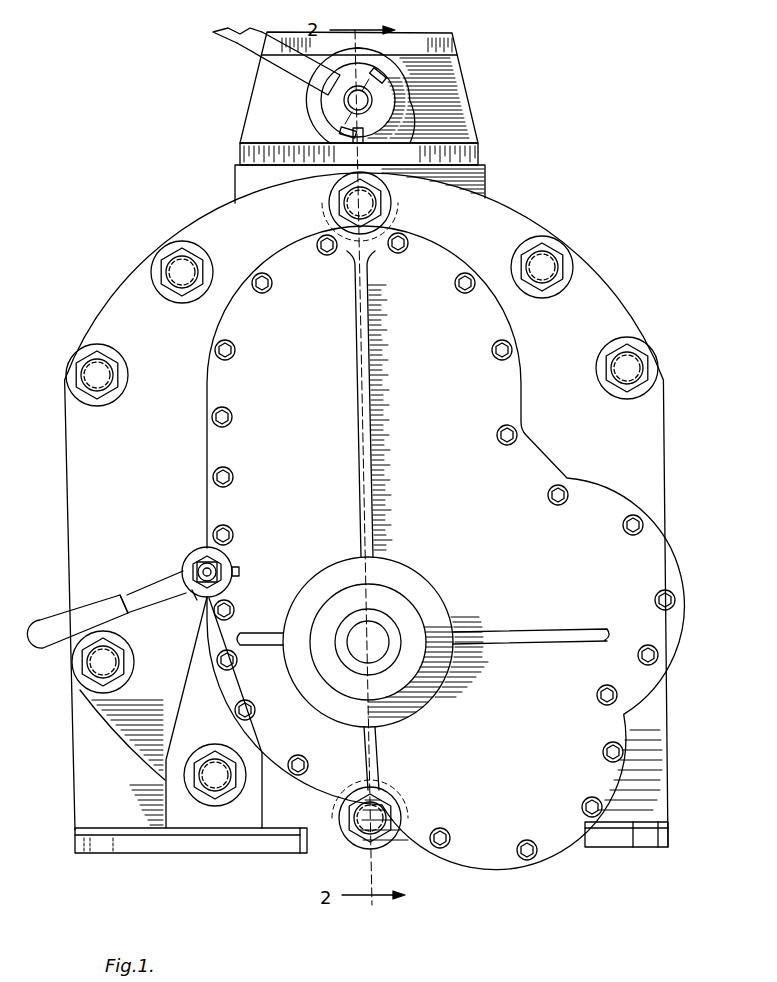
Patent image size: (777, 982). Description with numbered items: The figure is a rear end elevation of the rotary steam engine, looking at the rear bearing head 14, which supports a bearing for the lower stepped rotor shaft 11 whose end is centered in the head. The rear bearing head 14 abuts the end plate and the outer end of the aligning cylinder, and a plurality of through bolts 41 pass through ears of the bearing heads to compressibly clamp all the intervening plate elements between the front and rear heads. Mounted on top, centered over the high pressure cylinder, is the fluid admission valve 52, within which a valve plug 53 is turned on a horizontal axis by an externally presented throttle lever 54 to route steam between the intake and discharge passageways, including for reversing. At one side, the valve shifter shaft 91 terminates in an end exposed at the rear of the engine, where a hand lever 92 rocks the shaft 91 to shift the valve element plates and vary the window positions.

The lower stepped rotor shaft 11 is at (397, 656).
The rear bearing head 14 is at (604, 294).
The through bolts 41 is at (632, 369).
The fluid admission valve 52 is at (452, 93).
The valve plug 53 is at (388, 108).
The throttle lever 54 is at (248, 38).
The valve shifter shaft 91 is at (203, 557).
The hand lever 92 is at (100, 610).